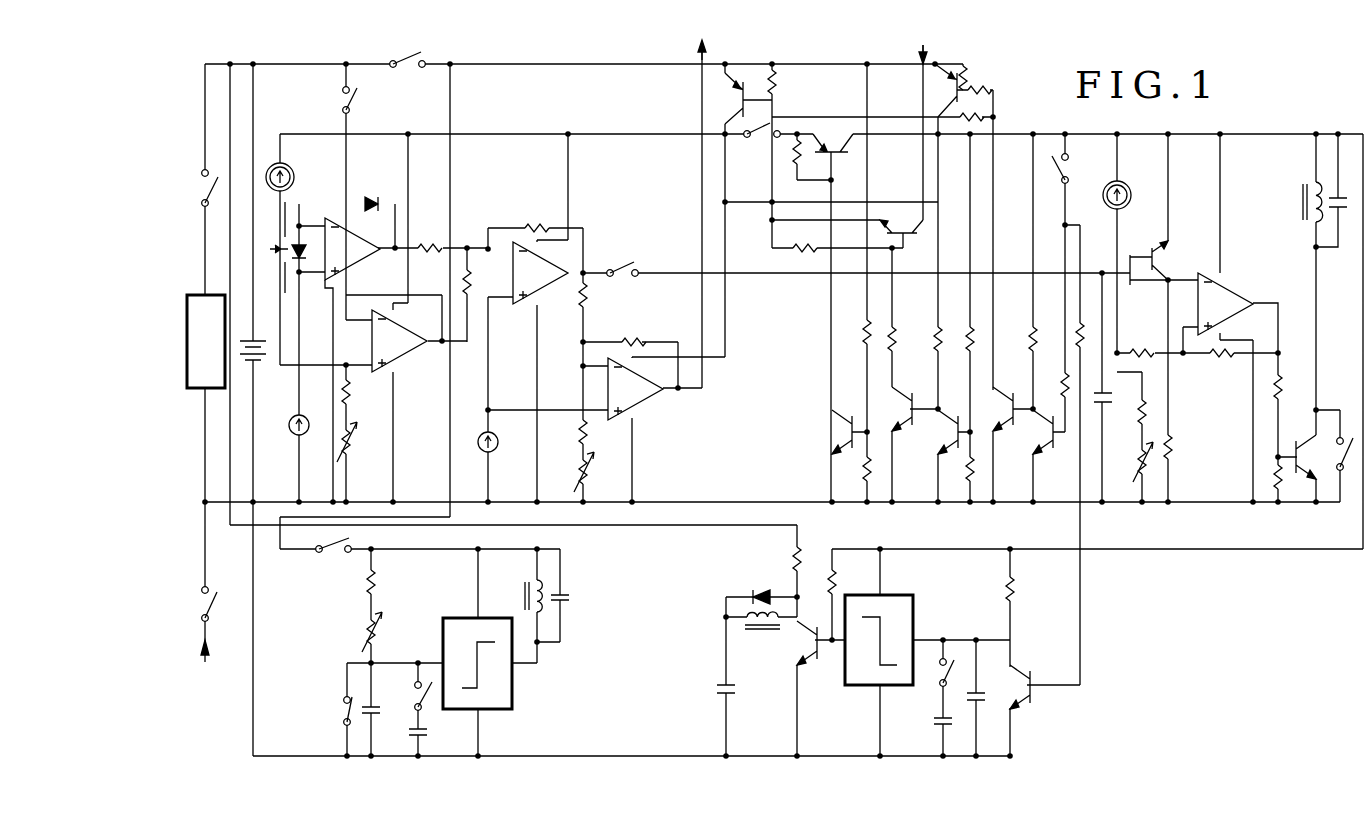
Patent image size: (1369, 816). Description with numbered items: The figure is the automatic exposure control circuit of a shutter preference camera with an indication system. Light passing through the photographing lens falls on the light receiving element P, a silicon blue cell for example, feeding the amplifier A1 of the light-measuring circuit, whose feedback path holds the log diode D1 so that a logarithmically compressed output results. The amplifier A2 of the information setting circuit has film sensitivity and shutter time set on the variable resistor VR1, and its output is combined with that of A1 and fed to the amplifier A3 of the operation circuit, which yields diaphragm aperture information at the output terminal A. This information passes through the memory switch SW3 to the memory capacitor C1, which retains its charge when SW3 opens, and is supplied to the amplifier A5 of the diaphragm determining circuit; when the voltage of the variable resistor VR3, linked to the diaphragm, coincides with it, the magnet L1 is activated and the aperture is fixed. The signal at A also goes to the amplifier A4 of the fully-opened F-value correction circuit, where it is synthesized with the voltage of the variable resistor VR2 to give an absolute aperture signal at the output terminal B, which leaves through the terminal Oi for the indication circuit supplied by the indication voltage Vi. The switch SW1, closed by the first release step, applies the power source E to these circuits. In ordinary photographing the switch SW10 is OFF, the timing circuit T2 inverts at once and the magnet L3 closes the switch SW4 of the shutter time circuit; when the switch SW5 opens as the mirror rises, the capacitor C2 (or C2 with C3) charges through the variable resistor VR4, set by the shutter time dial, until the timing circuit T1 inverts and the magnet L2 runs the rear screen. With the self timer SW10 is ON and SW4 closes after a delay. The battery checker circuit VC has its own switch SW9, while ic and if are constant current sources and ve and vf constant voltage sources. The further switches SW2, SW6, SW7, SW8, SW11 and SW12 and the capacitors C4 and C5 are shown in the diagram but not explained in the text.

The switch SW1 is at (370, 104).
The switch SW2 is at (764, 144).
The memory switch SW3 is at (629, 264).
The switch of the shutter time circuit SW4 is at (337, 559).
The switch SW5 is at (329, 711).
The switch SW6 is at (228, 605).
The switch SW7 is at (411, 52).
The switch SW8 is at (408, 696).
The switch SW9 is at (193, 188).
The switch SW10 is at (940, 670).
The switch SW11 is at (1346, 428).
The switch SW12 is at (1087, 169).
The amplifier A1 is at (352, 249).
The amplifier A2 is at (399, 341).
The amplifier A3 is at (540, 273).
The amplifier A4 is at (635, 389).
The amplifier A5 is at (1225, 304).
The variable resistor VR1 is at (363, 443).
The variable resistor VR2 is at (599, 476).
The variable resistor VR3 is at (1128, 462).
The variable resistor VR4 is at (388, 632).
The memory capacitor C1 is at (1099, 388).
The capacitor C2 is at (379, 725).
The capacitor C3 is at (429, 732).
The capacitor C4 is at (987, 700).
The capacitor C5 is at (931, 727).
The magnet L1 is at (1302, 202).
The magnet L2 is at (522, 596).
The magnet L3 is at (762, 637).
The timing circuit T1 is at (476, 632).
The timing circuit T2 is at (880, 608).
The log diode D1 is at (376, 198).
The light receiving element P is at (294, 251).
The power source E is at (253, 339).
The battery checker circuit VC is at (206, 341).
The constant current source ic is at (289, 178).
The constant voltage source vf is at (309, 426).
The constant voltage source ve is at (479, 442).
The constant current source if is at (1126, 195).
The output terminal A is at (590, 261).
The output terminal B is at (681, 398).
The terminal Oi is at (699, 38).
The indication voltage Vi is at (921, 45).